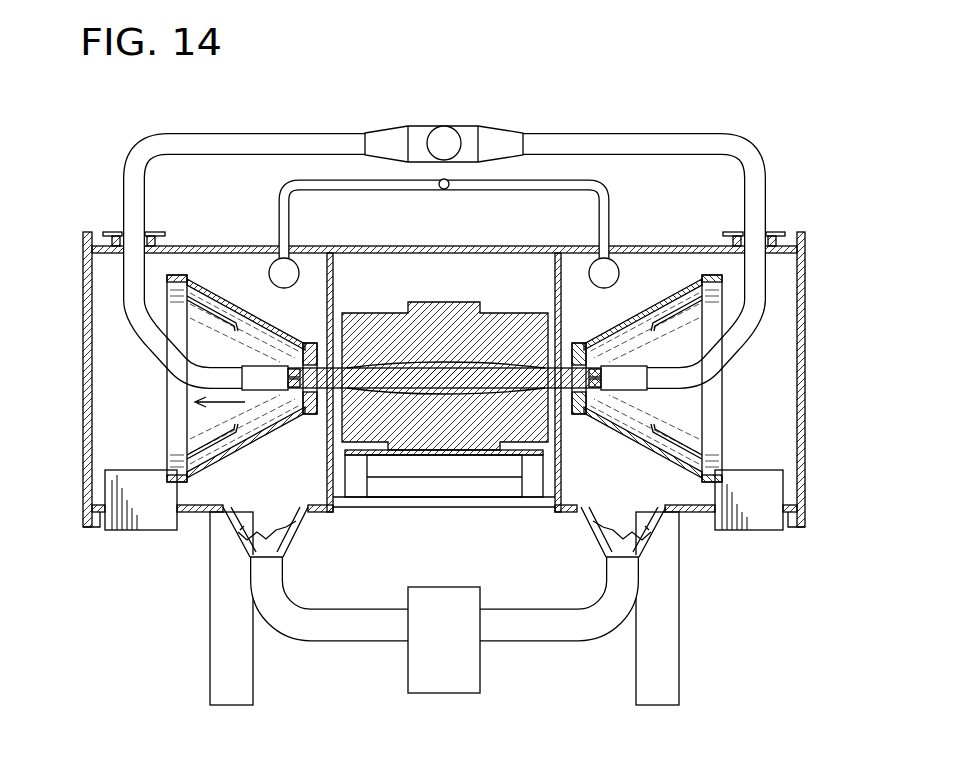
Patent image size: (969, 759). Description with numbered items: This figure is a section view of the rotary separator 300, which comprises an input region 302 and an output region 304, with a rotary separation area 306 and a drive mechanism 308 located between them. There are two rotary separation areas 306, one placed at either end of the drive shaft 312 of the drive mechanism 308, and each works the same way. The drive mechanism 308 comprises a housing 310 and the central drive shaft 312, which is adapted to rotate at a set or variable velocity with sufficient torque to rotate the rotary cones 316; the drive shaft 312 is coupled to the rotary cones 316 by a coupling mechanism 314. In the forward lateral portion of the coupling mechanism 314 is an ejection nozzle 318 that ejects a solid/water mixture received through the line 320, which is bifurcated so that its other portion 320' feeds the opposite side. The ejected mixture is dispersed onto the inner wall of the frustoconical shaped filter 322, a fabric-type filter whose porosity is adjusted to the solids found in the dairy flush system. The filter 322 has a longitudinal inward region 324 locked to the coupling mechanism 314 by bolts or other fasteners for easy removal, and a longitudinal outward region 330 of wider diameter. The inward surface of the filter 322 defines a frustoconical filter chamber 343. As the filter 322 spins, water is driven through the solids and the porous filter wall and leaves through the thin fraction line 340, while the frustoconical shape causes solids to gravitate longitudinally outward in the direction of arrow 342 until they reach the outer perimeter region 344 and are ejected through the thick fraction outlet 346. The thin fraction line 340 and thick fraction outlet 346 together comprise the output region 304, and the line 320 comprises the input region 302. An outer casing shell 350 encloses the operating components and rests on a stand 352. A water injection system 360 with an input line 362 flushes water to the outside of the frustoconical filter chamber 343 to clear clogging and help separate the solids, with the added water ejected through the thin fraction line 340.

The rotary separator 300 is at (133, 117).
The input region 302 is at (411, 109).
The output region 304 is at (98, 550).
The rotary separation area 306 is at (228, 280).
The drive mechanism 308 is at (440, 318).
The housing 310 is at (462, 318).
The drive shaft 312 is at (487, 373).
The coupling mechanism 314 is at (301, 372).
The rotary cone 316 is at (247, 445).
The ejection nozzle 318 is at (270, 389).
The line 320 is at (289, 233).
The other portion of line 320' is at (599, 235).
The frustoconical shaped filter 322 is at (232, 458).
The longitudinal inward region 324 is at (320, 345).
The longitudinal outward region 330 is at (172, 431).
The thin fraction line 340 is at (352, 630).
The arrow 342 is at (222, 406).
The frustoconical filter chamber 343 is at (235, 348).
The outer perimeter region 344 is at (172, 443).
The thick fraction outlet 346 is at (118, 490).
The outer casing shell 350 is at (195, 247).
The stand 352 is at (225, 665).
The water injection system 360 is at (370, 187).
The input line 362 is at (427, 187).